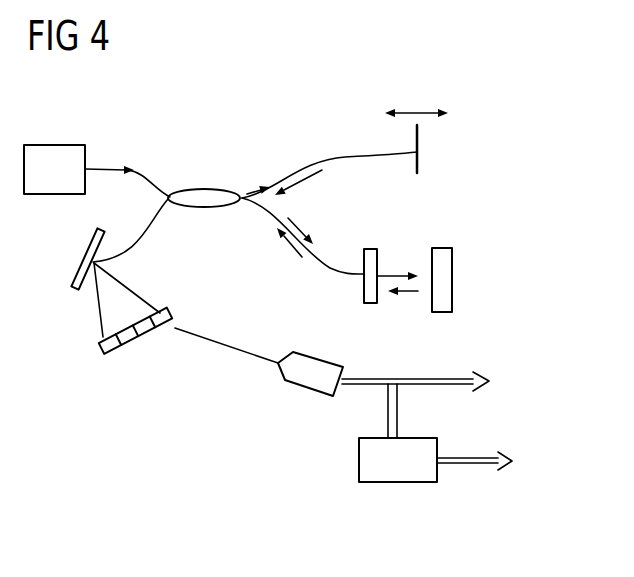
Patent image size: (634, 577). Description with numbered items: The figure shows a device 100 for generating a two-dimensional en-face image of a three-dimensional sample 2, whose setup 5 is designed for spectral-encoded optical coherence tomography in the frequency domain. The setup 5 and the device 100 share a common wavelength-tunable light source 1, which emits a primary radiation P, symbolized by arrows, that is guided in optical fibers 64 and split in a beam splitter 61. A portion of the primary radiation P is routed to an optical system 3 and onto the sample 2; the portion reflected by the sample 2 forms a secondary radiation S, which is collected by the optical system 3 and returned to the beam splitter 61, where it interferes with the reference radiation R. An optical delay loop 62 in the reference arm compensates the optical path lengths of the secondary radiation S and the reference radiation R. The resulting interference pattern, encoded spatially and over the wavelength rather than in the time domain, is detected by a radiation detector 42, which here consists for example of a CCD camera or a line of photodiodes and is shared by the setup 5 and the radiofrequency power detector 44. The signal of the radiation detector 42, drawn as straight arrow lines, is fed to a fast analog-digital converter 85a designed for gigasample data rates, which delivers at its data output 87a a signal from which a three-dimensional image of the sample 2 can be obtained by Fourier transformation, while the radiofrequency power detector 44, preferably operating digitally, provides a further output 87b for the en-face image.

The wavelength-tunable light source 1 is at (54, 145).
The primary radiation P is at (107, 168).
The beam splitter 61 is at (202, 190).
The optical fibers 64 is at (142, 230).
The radiation detector 42 is at (182, 333).
The reference radiation R is at (305, 181).
The optical delay loop 62 is at (419, 146).
The optical system 3 is at (371, 304).
The secondary radiation S is at (410, 297).
The sample 2 is at (452, 280).
The analog-digital converter 85a is at (307, 393).
The data output 87a is at (469, 376).
The radiofrequency power detector 44 is at (403, 483).
The output signal 87b is at (480, 465).
The setup for optical coherence tomography 5 is at (560, 93).
The device for generating a two-dimensional en-face image 100 is at (316, 306).